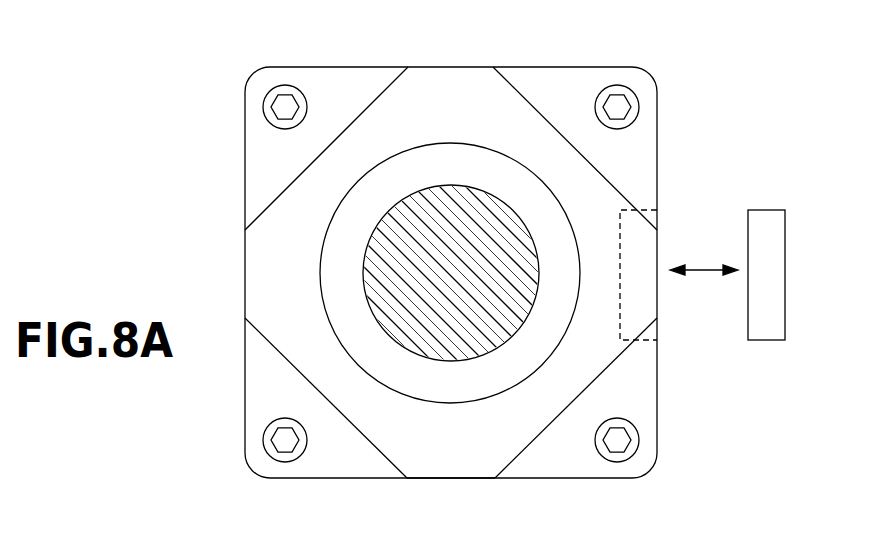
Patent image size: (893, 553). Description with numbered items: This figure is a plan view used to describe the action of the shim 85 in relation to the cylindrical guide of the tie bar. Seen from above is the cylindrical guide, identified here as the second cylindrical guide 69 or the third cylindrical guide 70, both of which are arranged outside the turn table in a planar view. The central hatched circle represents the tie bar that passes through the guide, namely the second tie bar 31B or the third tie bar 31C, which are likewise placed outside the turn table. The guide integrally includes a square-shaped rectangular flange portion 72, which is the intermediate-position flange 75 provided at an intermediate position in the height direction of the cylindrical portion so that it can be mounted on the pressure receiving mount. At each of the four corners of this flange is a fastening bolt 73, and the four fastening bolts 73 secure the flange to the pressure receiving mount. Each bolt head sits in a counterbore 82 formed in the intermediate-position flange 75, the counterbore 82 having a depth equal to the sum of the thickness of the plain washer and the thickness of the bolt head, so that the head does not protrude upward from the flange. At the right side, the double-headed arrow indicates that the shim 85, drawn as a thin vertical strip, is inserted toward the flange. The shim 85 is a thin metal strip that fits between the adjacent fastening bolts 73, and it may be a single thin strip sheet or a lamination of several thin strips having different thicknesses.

The third cylindrical guide 70 is at (383, 272).
The second cylindrical guide 69 is at (305, 272).
The third tie bar 31C is at (455, 257).
The second tie bar 31B is at (452, 223).
The counterbore 82 is at (557, 87).
The fastening bolt 73 is at (632, 90).
The rectangular flange portion 72 is at (451, 499).
The intermediate-position flange 75 is at (447, 458).
The shim 85 is at (773, 268).